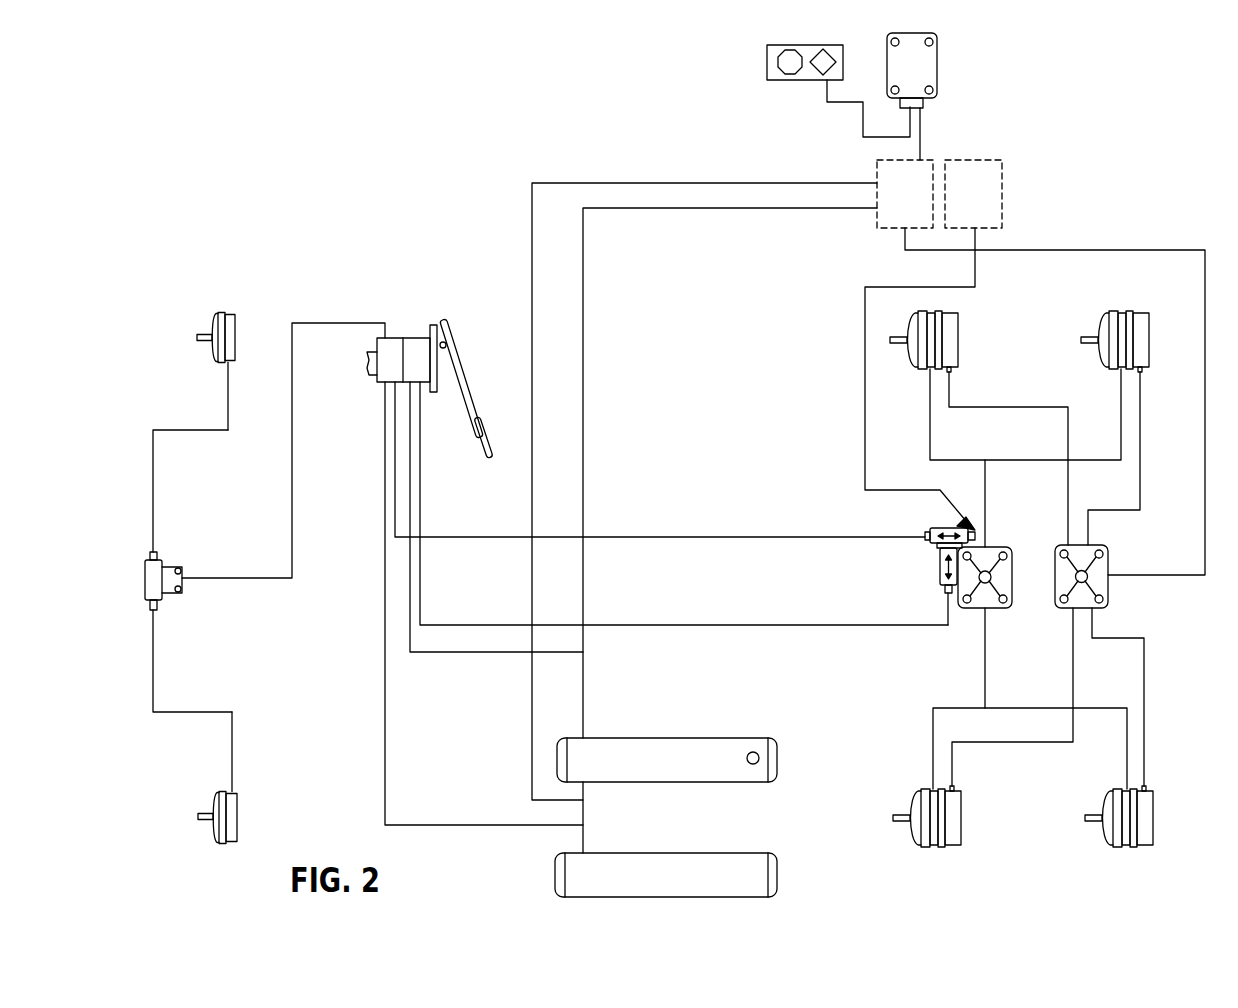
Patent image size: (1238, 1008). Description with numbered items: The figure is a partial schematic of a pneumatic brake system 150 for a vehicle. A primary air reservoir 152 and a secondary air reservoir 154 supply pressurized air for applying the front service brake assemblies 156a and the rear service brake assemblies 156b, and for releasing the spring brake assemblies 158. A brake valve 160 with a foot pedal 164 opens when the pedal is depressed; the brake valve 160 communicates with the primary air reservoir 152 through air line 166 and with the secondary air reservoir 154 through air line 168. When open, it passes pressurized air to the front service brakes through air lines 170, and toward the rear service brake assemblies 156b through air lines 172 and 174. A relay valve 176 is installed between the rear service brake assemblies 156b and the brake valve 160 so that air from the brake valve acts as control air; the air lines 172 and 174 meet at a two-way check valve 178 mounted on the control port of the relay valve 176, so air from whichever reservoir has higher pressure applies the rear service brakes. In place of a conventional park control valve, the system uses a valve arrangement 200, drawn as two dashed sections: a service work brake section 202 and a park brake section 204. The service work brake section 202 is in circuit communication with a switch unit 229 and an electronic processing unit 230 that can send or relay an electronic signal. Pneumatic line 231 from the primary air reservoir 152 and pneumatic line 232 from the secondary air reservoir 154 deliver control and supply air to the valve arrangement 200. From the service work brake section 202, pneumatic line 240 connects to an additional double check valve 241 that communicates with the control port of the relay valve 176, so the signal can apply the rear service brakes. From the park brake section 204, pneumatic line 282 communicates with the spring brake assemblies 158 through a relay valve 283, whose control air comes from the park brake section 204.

The pneumatic brake system 150 is at (340, 172).
The primary air reservoir 152 is at (667, 760).
The secondary air reservoir 154 is at (666, 875).
The front service brake assemblies 156a is at (220, 313).
The rear service brake assemblies 156b is at (910, 318).
The spring brake assemblies 158 is at (952, 330).
The brake valve 160 is at (380, 380).
The foot pedal 164 is at (462, 380).
The air line 166 is at (385, 652).
The air line 168 is at (475, 652).
The air lines 170 is at (292, 481).
The air line 172 is at (765, 540).
The air line 174 is at (740, 625).
The relay valve 176 is at (973, 612).
The two-way check valve 178 is at (938, 565).
The valve arrangement 200 is at (1034, 162).
The service work brake section 202 is at (877, 176).
The park brake section 204 is at (990, 160).
The switch unit 229 is at (782, 80).
The electronic processing unit 230 is at (930, 65).
The pneumatic line 231 is at (660, 210).
The pneumatic line 232 is at (632, 183).
The pneumatic line 240 is at (865, 370).
The double check valve 241 is at (935, 528).
The pneumatic line 282 is at (1105, 250).
The relay valve 283 is at (1110, 593).